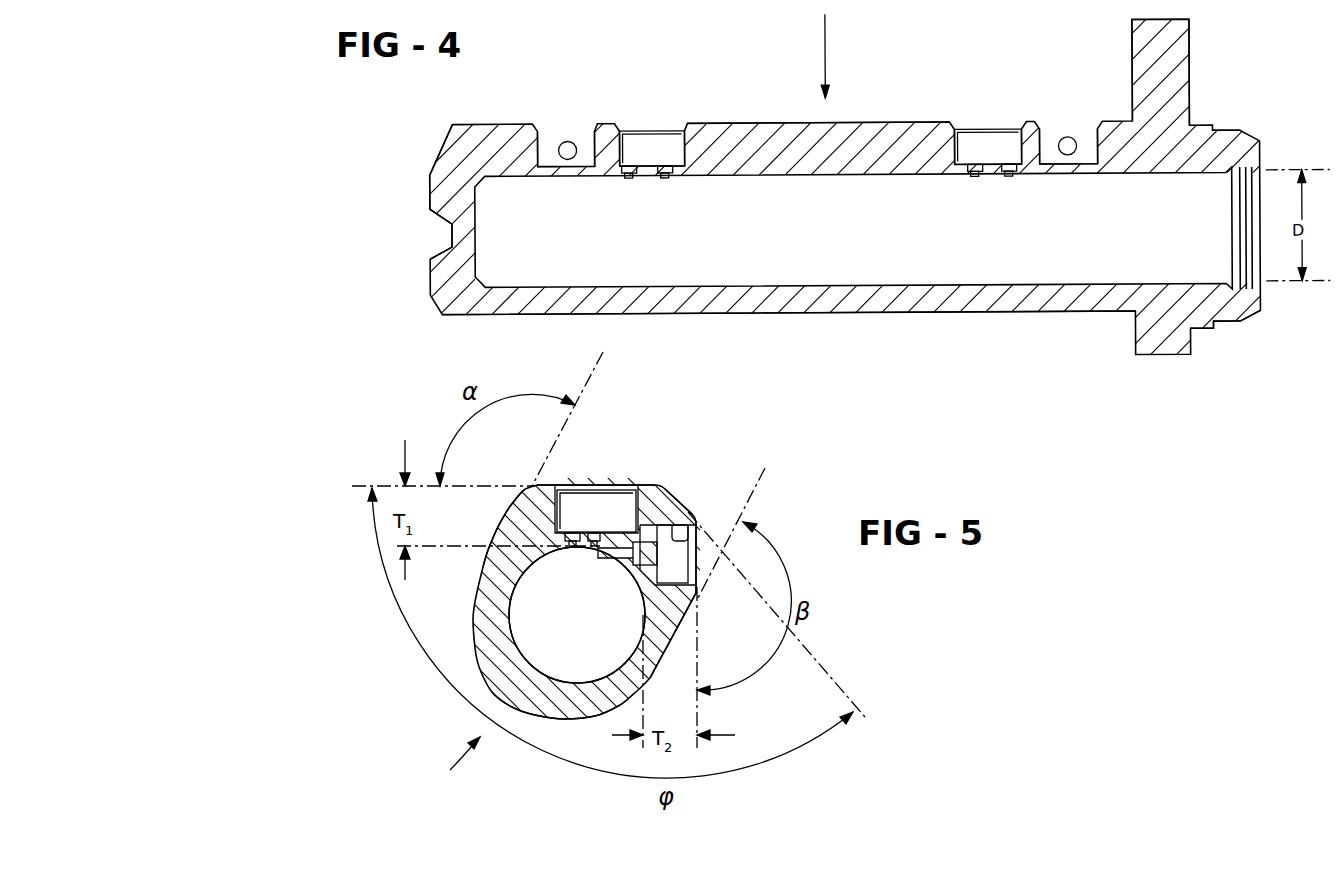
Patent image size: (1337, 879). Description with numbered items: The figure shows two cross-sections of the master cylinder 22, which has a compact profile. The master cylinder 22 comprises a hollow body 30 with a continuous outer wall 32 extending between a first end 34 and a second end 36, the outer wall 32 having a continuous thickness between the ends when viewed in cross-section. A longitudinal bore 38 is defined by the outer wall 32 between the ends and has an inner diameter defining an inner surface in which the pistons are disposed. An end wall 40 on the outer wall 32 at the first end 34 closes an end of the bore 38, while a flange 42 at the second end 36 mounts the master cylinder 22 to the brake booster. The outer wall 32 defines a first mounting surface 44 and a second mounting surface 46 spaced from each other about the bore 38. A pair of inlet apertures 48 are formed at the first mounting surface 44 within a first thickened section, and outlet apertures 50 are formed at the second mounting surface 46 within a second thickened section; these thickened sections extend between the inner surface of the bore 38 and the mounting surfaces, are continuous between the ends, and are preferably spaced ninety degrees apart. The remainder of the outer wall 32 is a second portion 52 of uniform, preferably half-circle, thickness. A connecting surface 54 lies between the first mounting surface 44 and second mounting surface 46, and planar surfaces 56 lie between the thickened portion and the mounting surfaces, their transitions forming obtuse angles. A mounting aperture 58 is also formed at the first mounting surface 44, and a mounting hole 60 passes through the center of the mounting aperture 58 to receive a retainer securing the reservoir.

In FIG. 4, the master cylinder 22 is at (826, 14).
In FIG. 5, the master cylinder 22 is at (450, 770).
In FIG. 4, the hollow body 30 is at (838, 312).
In FIG. 5, the hollow body 30 is at (477, 640).
In FIG. 4, the outer wall 32 is at (697, 305).
In FIG. 5, the outer wall 32 is at (567, 707).
In FIG. 4, the first end 34 is at (453, 123).
In FIG. 4, the second end 36 is at (1228, 323).
In FIG. 4, the longitudinal bore 38 is at (930, 284).
In FIG. 5, the longitudinal bore 38 is at (533, 663).
In FIG. 4, the end wall 40 is at (445, 268).
In FIG. 4, the flange 42 is at (1177, 38).
In FIG. 4, the first mounting surface 44 is at (708, 122).
In FIG. 5, the first mounting surface 44 is at (647, 484).
In FIG. 5, the second mounting surface 46 is at (702, 593).
In FIG. 4, the inlet aperture 48 is at (623, 147).
In FIG. 5, the inlet aperture 48 is at (571, 510).
In FIG. 5, the outlet aperture 50 is at (687, 537).
In FIG. 5, the second portion 52 is at (512, 637).
In FIG. 5, the connecting surface 54 is at (680, 497).
In FIG. 5, the planar surfaces 56 is at (503, 523).
In FIG. 4, the mounting aperture 58 is at (542, 147).
In FIG. 4, the mounting hole 60 is at (574, 144).